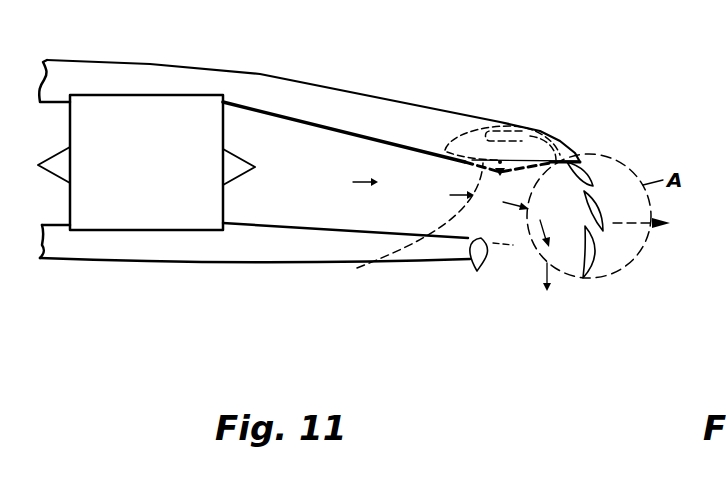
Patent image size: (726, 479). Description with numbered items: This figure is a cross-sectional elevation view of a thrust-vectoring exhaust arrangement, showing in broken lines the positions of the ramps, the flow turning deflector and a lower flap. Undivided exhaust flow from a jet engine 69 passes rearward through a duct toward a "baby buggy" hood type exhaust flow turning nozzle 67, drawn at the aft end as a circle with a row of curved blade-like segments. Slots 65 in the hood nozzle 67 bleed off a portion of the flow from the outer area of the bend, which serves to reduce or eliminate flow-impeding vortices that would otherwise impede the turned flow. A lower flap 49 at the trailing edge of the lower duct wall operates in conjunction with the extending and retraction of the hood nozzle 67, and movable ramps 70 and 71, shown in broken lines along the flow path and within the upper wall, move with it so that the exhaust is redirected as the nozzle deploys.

The lower flap 49 is at (466, 268).
The slots 65 is at (585, 226).
The hood type exhaust flow turning nozzle 67 is at (585, 171).
The jet engine 69 is at (172, 205).
The movable ramp 70 is at (357, 268).
The movable ramp 71 is at (530, 160).